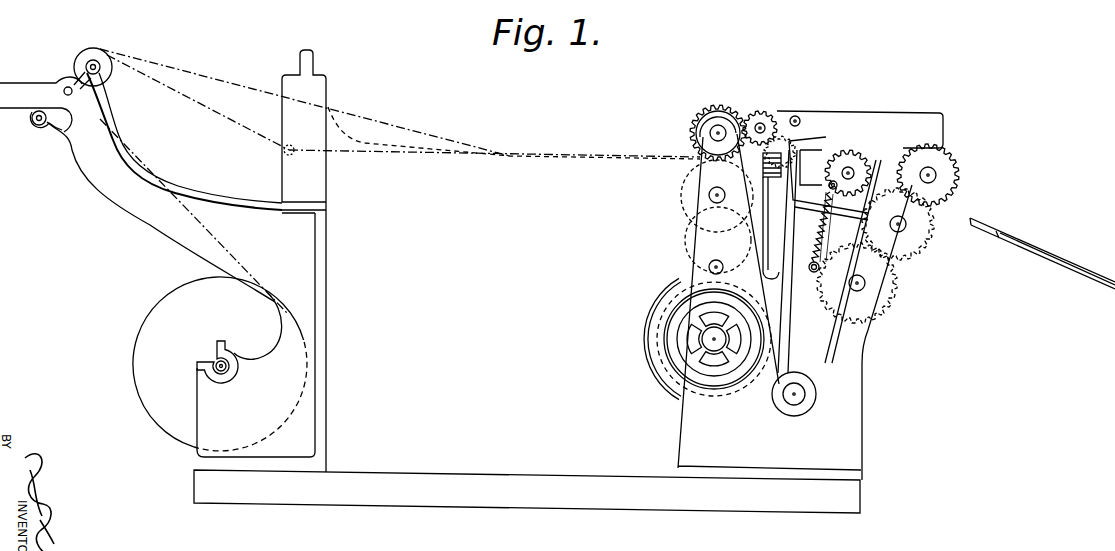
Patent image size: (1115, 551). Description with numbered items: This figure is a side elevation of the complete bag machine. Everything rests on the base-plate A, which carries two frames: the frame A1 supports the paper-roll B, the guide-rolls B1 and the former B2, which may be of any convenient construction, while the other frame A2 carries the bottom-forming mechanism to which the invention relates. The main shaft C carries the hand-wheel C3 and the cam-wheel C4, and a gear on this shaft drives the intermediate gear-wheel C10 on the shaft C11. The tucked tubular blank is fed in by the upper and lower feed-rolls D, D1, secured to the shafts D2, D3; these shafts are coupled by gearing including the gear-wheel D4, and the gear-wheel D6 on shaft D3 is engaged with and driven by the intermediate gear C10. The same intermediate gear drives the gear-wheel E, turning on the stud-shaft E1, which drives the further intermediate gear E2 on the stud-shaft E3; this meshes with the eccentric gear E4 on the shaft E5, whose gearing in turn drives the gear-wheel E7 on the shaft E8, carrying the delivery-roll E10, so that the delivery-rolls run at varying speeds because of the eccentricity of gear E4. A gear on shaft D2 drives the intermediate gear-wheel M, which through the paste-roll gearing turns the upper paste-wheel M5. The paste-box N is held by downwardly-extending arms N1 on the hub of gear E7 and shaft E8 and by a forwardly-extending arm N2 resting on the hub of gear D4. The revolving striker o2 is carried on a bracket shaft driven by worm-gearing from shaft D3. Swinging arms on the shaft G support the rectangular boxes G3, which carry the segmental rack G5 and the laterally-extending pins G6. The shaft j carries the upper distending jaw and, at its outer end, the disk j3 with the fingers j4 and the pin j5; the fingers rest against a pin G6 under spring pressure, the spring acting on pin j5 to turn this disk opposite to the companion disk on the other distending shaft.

The base-plate A is at (527, 491).
The frame A1 is at (178, 261).
The frame A2 is at (795, 298).
The paper-roll B is at (220, 364).
The guide-rolls B1 is at (350, 181).
The former B2 is at (362, 142).
The upper feed-roll D is at (695, 123).
The lower feed-roll D1 is at (690, 205).
The shaft D2 is at (718, 124).
The shaft D3 is at (719, 197).
The gear-wheel D4 is at (692, 133).
The gear-wheel D6 is at (693, 192).
The intermediate gear-wheel M is at (787, 120).
The upper paste-wheel M5 is at (795, 116).
The paste-box N is at (852, 112).
The downwardly-extending arms N1 is at (944, 148).
The forwardly-extending arm N2 is at (760, 111).
The revolving striker o2 is at (772, 181).
The shaft G is at (846, 150).
The rectangular boxes G3 is at (824, 160).
The segmental rack G5 is at (811, 167).
The laterally-extending pins G6 is at (849, 212).
The shaft j is at (817, 242).
The disk j3 is at (838, 182).
The fingers j4 is at (844, 223).
The pin j5 is at (809, 207).
The gear-wheel E is at (829, 261).
The stud-shaft E1 is at (782, 303).
The intermediate gear E2 is at (886, 304).
The stud-shaft E3 is at (865, 276).
The eccentric gear E4 is at (920, 262).
The shaft E5 is at (906, 232).
The gear-wheel E7 is at (955, 190).
The shaft E8 is at (936, 175).
The delivery-roll E10 is at (956, 160).
The main shaft C is at (712, 341).
The hand-wheel C3 is at (696, 356).
The cam-wheel C4 is at (652, 310).
The intermediate gear-wheel C10 is at (676, 262).
The shaft C11 is at (709, 267).